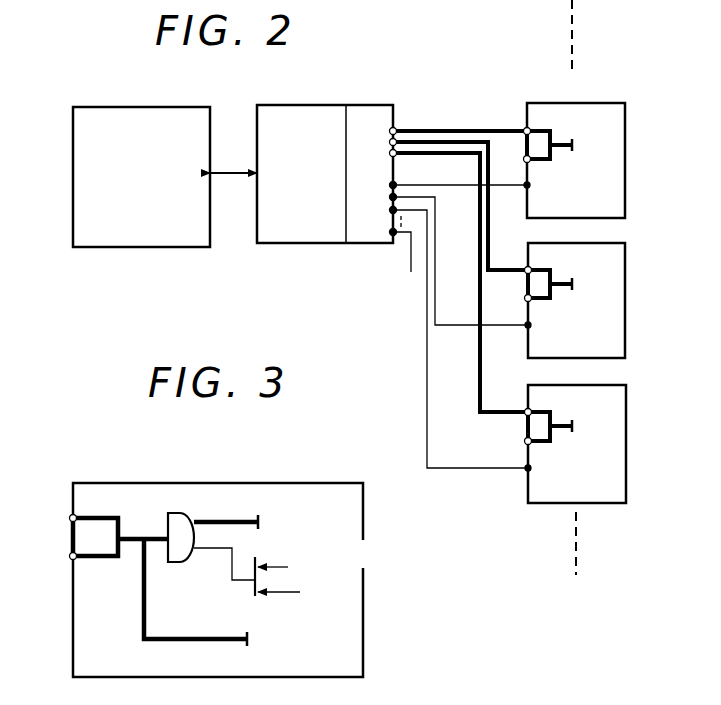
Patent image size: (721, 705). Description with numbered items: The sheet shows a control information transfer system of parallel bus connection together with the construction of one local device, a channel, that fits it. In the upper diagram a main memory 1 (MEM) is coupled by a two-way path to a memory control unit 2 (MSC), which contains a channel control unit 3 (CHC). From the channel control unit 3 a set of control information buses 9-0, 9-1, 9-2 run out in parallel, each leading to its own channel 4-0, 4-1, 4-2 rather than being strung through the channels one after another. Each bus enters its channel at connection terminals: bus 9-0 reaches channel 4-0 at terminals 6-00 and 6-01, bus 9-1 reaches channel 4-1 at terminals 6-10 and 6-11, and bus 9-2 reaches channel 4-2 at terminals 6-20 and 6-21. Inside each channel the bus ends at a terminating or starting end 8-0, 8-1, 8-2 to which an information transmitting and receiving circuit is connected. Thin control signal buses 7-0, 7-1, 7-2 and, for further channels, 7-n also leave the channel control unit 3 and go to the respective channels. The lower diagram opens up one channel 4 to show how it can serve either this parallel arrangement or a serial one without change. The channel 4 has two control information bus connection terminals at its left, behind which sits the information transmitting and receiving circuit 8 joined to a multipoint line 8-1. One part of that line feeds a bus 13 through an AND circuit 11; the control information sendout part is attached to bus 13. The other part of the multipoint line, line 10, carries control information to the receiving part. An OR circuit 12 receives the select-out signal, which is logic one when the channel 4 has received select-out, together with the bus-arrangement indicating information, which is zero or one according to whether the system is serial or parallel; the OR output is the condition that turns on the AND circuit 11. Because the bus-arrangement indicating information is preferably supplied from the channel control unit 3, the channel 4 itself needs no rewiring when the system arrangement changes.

In FIG. 2, the main memory 1 is at (150, 107).
In FIG. 2, the memory control unit 2 is at (287, 105).
In FIG. 2, the channel control unit 3 is at (363, 105).
In FIG. 2, the channel 4-0 is at (626, 118).
In FIG. 2, the channel 4-1 is at (626, 283).
In FIG. 2, the channel 4-2 is at (627, 419).
In FIG. 3, the channel 4 is at (312, 481).
In FIG. 2, the connection terminal 6-00 is at (524, 128).
In FIG. 2, the connection terminal 6-01 is at (529, 162).
In FIG. 2, the connection terminal 6-10 is at (525, 268).
In FIG. 2, the connection terminal 6-11 is at (530, 301).
In FIG. 2, the connection terminal 6-20 is at (525, 409).
In FIG. 2, the connection terminal 6-21 is at (524, 441).
In FIG. 2, the control signal bus 7-0 is at (440, 187).
In FIG. 2, the control signal bus 7-1 is at (437, 222).
In FIG. 2, the control signal bus 7-2 is at (428, 365).
In FIG. 2, the control signal bus 7-n is at (409, 262).
In FIG. 2, the terminating end of bus 8-0 is at (574, 147).
In FIG. 2, the multipoint line 8-1 is at (574, 286).
In FIG. 3, the multipoint line 8-1 is at (133, 537).
In FIG. 2, the terminating end of bus 8-2 is at (574, 428).
In FIG. 3, the information transmitting and receiving circuit 8 is at (128, 591).
In FIG. 2, the control information bus 9-0 is at (410, 131).
In FIG. 2, the control information bus 9-1 is at (463, 142).
In FIG. 2, the control information bus 9-2 is at (412, 156).
In FIG. 3, the other part of multipoint line 10 is at (177, 641).
In FIG. 3, the AND circuit 11 is at (176, 562).
In FIG. 3, the OR circuit 12 is at (254, 590).
In FIG. 3, the bus 13 is at (258, 516).